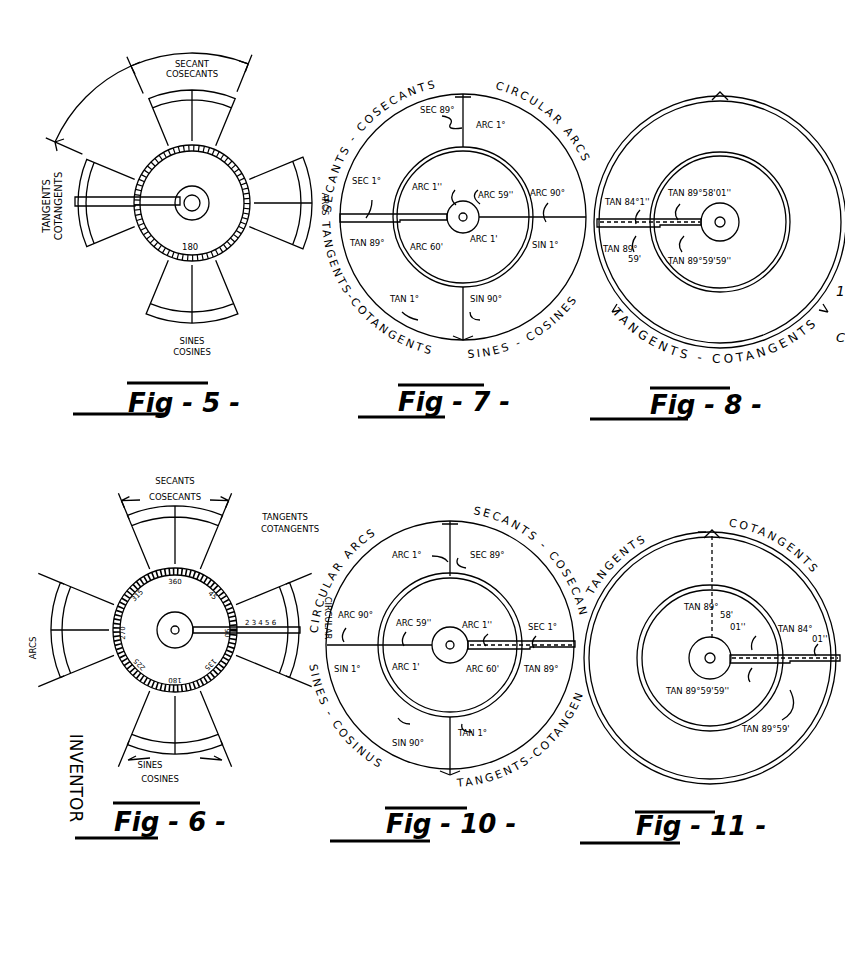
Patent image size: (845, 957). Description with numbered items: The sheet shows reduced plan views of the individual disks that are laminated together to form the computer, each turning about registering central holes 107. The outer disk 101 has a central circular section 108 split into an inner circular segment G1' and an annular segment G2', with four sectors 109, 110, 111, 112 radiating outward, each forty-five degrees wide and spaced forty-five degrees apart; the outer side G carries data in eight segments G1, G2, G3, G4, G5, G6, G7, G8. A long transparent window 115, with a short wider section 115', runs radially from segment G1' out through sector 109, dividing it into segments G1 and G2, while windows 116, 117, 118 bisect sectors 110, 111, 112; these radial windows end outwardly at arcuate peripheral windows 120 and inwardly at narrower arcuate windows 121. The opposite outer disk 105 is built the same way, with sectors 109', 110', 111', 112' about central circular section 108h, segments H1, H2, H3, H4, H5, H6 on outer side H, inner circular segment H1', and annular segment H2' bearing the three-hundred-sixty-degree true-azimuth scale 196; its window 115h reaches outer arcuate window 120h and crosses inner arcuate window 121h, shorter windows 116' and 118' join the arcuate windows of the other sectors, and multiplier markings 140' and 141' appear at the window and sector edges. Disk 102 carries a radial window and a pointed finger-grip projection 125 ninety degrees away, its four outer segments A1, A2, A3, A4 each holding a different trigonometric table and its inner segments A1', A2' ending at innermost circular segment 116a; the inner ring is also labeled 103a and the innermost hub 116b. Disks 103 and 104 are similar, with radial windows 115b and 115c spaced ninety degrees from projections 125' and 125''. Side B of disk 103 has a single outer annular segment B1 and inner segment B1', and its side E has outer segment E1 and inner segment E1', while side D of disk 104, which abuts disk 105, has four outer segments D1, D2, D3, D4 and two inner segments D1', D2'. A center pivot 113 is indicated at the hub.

In FIG. 5, the outer disk 101 is at (118, 348).
In FIG. 7, the disk 102 is at (376, 312).
In FIG. 11, the disk 102 is at (840, 764).
In FIG. 8, the disk 103 is at (624, 304).
In FIG. 11, the disk 103 is at (626, 752).
In FIG. 7, the inner scale ring 103a is at (420, 258).
In FIG. 10, the disk 104 is at (342, 720).
In FIG. 6, the outer disk 105 is at (232, 512).
In FIG. 7, the central hole 107 is at (446, 216).
In FIG. 5, the central circular section 108 is at (228, 262).
In FIG. 6, the central circular section 108h is at (136, 688).
In FIG. 5, the sector 109 is at (104, 229).
In FIG. 6, the sector 109' is at (261, 681).
In FIG. 5, the sector 110 is at (168, 118).
In FIG. 6, the sector 110' is at (120, 547).
In FIG. 5, the sector 111 is at (271, 140).
In FIG. 6, the sector 111' is at (91, 579).
In FIG. 5, the sector 112 is at (212, 291).
In FIG. 6, the sector 112' is at (150, 726).
In FIG. 5, the center pivot 113 is at (196, 204).
In FIG. 5, the transparent window 115 is at (127, 246).
In FIG. 7, the transparent window 115 is at (393, 218).
In FIG. 5, the wider window section 115' is at (125, 246).
In FIG. 8, the radial window 115b is at (660, 202).
In FIG. 11, the radial window 115b is at (770, 650).
In FIG. 10, the radial window 115c is at (518, 638).
In FIG. 6, the window 115h is at (300, 625).
In FIG. 5, the transparent window 116 is at (237, 84).
In FIG. 6, the radial window 116' is at (109, 521).
In FIG. 7, the innermost circular segment 116a is at (468, 198).
In FIG. 8, the center hub 116b is at (727, 218).
In FIG. 5, the transparent window 117 is at (262, 170).
In FIG. 6, the transparent window 117 is at (62, 620).
In FIG. 5, the transparent window 118 is at (135, 306).
In FIG. 6, the radial window 118' is at (242, 741).
In FIG. 5, the arcuate peripheral window 120 is at (58, 272).
In FIG. 6, the arcuate peripheral window 120h is at (266, 592).
In FIG. 5, the arcuate window 121 is at (134, 182).
In FIG. 6, the arcuate window 121h is at (236, 682).
In FIG. 7, the pointed projection 125 is at (497, 73).
In FIG. 8, the radial projection 125' is at (742, 82).
In FIG. 11, the radial projection 125' is at (737, 510).
In FIG. 10, the radial projection 125'' is at (445, 494).
In FIG. 6, the numerical markings 140' is at (285, 608).
In FIG. 6, the numerical markings 141' is at (132, 561).
In FIG. 6, the 360° scale 196 is at (118, 604).
In FIG. 5, the outer side G is at (232, 111).
In FIG. 5, the segment G1 is at (99, 227).
In FIG. 5, the segment G2 is at (99, 177).
In FIG. 5, the segment G3 is at (169, 113).
In FIG. 5, the segment G4 is at (209, 113).
In FIG. 5, the segment G5 is at (277, 183).
In FIG. 5, the segment G6 is at (277, 221).
In FIG. 5, the segment G7 is at (207, 297).
In FIG. 5, the segment G8 is at (169, 297).
In FIG. 5, the inner circular segment G1' is at (246, 248).
In FIG. 5, the annular segment G2' is at (280, 249).
In FIG. 7, the outer arcuate segment A1 is at (396, 279).
In FIG. 7, the outer arcuate segment A2 is at (386, 157).
In FIG. 7, the outer arcuate segment A3 is at (513, 155).
In FIG. 7, the outer arcuate segment A4 is at (513, 279).
In FIG. 7, the inner segment A1' is at (462, 167).
In FIG. 7, the inner segment A2' is at (462, 267).
In FIG. 8, the side B is at (787, 133).
In FIG. 8, the outer annular segment B1 is at (720, 127).
In FIG. 8, the inner segment B1' is at (755, 231).
In FIG. 6, the outer side H is at (215, 726).
In FIG. 6, the segment H1 is at (265, 651).
In FIG. 6, the segment H2 is at (265, 607).
In FIG. 6, the segment H3 is at (201, 537).
In FIG. 6, the segment H4 is at (163, 537).
In FIG. 6, the segment H5 is at (81, 609).
In FIG. 6, the segment H6 is at (81, 651).
In FIG. 6, the inner circular segment H1' is at (208, 588).
In FIG. 6, the annular segment H2' is at (85, 685).
In FIG. 10, the side D is at (372, 561).
In FIG. 10, the outer segment D1 is at (509, 713).
In FIG. 10, the outer segment D2 is at (509, 577).
In FIG. 10, the outer segment D3 is at (385, 577).
In FIG. 10, the outer segment D4 is at (385, 713).
In FIG. 10, the inner segment D1' is at (447, 603).
In FIG. 10, the inner segment D2' is at (447, 695).
In FIG. 11, the side E is at (626, 581).
In FIG. 11, the outer annular segment E1 is at (708, 755).
In FIG. 11, the inner segment E1' is at (668, 627).